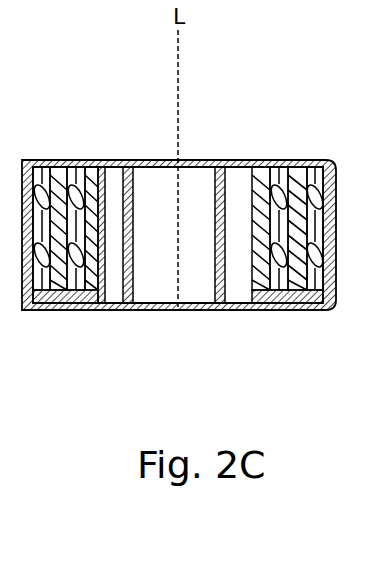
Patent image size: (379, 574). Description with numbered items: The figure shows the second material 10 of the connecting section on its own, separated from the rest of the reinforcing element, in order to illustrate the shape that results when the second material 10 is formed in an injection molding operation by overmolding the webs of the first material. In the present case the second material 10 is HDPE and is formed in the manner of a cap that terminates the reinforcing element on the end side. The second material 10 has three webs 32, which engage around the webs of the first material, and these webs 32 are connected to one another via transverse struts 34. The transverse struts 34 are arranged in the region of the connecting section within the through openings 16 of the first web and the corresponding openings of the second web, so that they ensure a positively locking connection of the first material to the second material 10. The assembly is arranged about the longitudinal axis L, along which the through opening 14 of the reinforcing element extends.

The second material 10 is at (181, 183).
The through opening 14 is at (209, 245).
The openings of the first web 16 is at (14, 41).
The webs of the second material 32 is at (54, 166).
The transverse struts 34 is at (316, 166).